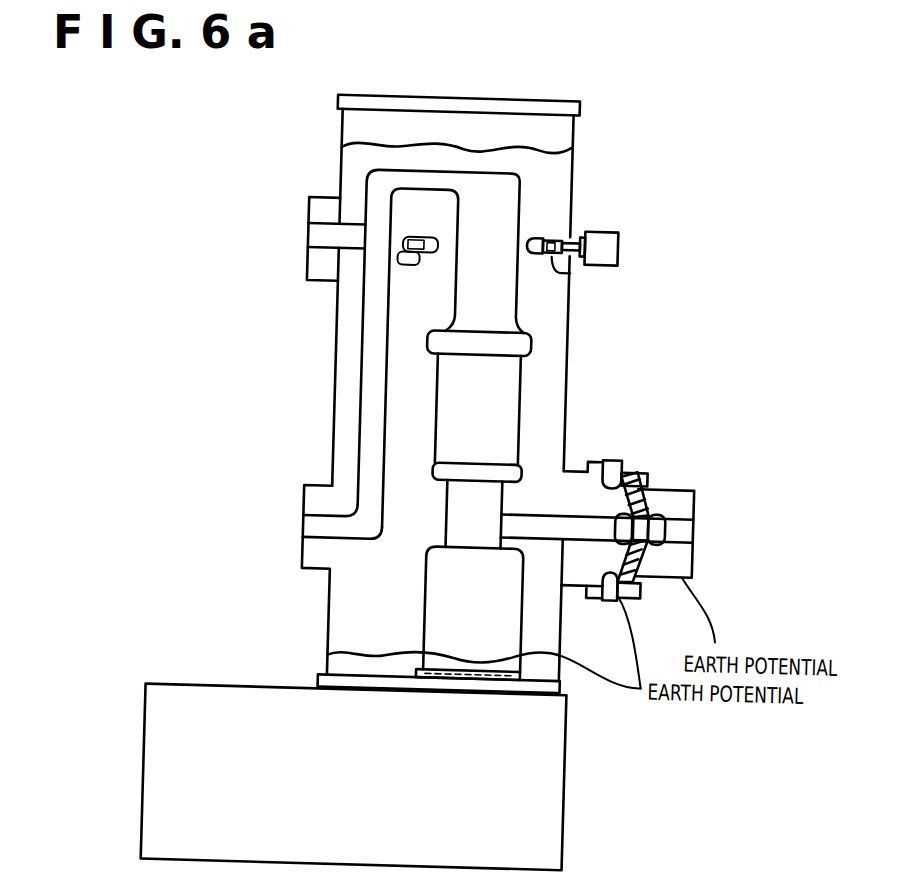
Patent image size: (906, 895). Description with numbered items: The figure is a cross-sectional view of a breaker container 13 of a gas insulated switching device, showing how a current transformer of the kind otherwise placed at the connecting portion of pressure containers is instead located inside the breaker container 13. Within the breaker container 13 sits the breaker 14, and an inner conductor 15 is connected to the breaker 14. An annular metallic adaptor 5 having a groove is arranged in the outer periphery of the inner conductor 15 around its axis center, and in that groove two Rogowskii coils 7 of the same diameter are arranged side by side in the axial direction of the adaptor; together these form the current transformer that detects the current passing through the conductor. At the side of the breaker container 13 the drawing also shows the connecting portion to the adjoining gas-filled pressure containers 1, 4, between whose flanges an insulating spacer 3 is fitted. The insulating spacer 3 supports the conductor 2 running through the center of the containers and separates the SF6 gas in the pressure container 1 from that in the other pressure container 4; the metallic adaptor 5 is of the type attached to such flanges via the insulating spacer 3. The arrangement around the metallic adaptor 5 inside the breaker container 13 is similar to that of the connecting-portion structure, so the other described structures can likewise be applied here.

The pressure container 1 is at (583, 467).
The conductor 2 is at (573, 585).
The insulating spacer 3 is at (638, 467).
The pressure container 4 is at (676, 572).
The metallic adaptor 5 is at (549, 235).
The Rogowskii coils 7 is at (547, 252).
The breaker container 13 is at (345, 170).
The breaker 14 is at (490, 402).
The inner conductor 15 is at (490, 204).